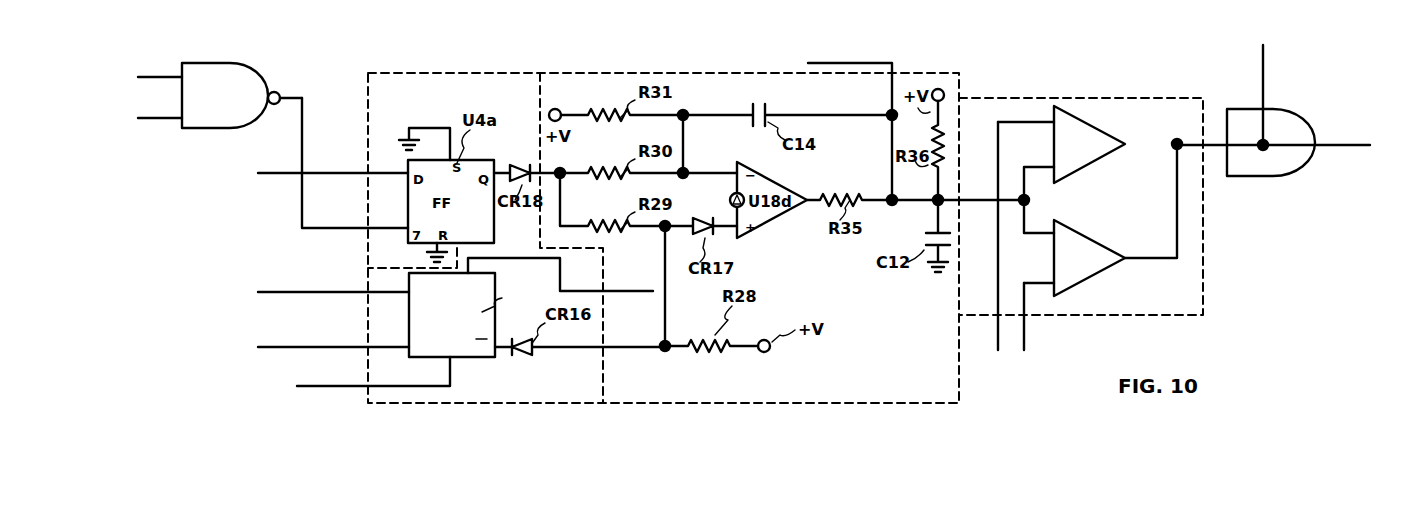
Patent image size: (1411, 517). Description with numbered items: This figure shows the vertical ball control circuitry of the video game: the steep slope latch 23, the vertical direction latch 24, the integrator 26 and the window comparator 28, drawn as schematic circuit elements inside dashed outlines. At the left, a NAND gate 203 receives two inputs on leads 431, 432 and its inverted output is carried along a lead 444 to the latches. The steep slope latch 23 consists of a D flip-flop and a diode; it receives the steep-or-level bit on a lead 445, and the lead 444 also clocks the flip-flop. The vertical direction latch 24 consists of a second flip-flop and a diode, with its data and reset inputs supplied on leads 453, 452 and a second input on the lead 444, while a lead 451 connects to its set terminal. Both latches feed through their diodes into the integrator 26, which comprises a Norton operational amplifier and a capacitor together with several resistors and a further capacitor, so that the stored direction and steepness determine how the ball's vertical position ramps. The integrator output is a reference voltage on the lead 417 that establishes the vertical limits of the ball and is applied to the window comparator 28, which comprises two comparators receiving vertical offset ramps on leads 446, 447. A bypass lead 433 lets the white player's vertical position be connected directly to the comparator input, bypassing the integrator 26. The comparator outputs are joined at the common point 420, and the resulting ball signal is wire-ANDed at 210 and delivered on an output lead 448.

The NAND gate 203 is at (232, 80).
The input line 431 is at (152, 74).
The input line 432 is at (160, 119).
The signal line 444 is at (302, 152).
The signal line 445 is at (283, 175).
The signal line 453 is at (280, 292).
The signal line 452 is at (346, 386).
The signal line 451 is at (640, 273).
The steep slope latch 23 is at (420, 73).
The vertical direction latch 24 is at (364, 283).
The integrator 26 is at (965, 95).
The window comparator 28 is at (1085, 98).
The signal line 446 is at (994, 332).
The signal line 447 is at (1027, 330).
The lead 417 is at (984, 182).
The bypass lead 433 is at (830, 63).
The wire-AND point 210 is at (1290, 160).
The output line 448 is at (1333, 142).
The common point 420 is at (1266, 72).